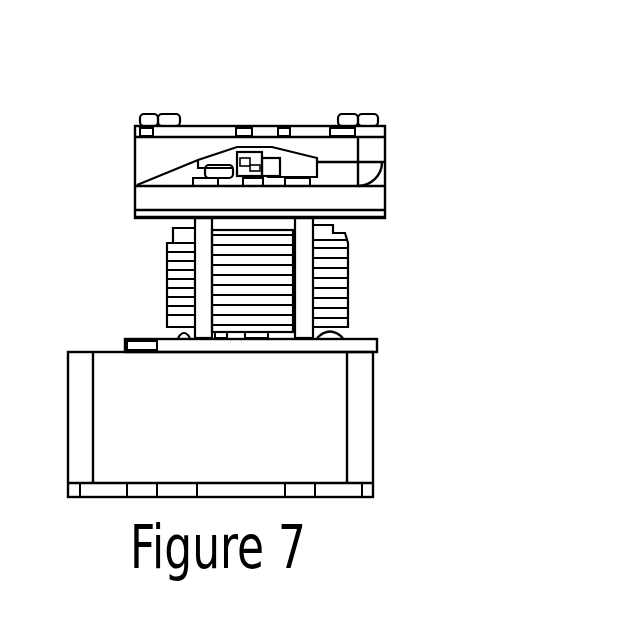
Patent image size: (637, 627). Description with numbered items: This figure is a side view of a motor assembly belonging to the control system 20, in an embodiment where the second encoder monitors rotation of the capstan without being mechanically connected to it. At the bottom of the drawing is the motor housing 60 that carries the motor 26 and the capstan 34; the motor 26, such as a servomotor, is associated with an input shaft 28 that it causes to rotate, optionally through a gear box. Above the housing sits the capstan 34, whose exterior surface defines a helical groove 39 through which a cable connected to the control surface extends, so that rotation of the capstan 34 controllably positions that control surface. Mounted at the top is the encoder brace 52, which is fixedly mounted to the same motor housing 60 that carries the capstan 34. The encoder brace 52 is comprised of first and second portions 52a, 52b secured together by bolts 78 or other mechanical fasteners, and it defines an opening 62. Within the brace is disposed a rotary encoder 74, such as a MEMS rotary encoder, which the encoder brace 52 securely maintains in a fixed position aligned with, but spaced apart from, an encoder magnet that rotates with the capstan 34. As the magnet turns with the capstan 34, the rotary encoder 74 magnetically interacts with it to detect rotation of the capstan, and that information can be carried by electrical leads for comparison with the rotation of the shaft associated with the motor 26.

The control system 20 is at (456, 230).
The motor 26 is at (348, 421).
The input shaft 28 is at (260, 334).
The capstan 34 is at (350, 282).
The helical groove 39 is at (350, 312).
The encoder brace 52 is at (376, 146).
The first portion of the encoder brace 52a is at (386, 195).
The second portion of the encoder brace 52b is at (312, 130).
The motor housing 60 is at (80, 430).
The opening 62 is at (230, 160).
The rotary encoder 74 is at (262, 132).
The bolts 78 is at (357, 112).